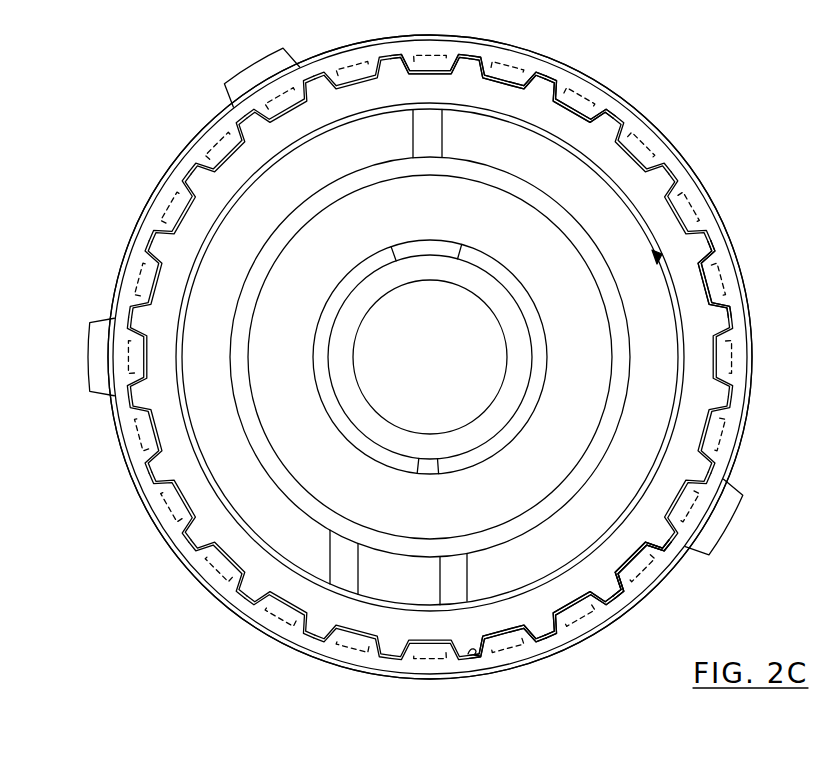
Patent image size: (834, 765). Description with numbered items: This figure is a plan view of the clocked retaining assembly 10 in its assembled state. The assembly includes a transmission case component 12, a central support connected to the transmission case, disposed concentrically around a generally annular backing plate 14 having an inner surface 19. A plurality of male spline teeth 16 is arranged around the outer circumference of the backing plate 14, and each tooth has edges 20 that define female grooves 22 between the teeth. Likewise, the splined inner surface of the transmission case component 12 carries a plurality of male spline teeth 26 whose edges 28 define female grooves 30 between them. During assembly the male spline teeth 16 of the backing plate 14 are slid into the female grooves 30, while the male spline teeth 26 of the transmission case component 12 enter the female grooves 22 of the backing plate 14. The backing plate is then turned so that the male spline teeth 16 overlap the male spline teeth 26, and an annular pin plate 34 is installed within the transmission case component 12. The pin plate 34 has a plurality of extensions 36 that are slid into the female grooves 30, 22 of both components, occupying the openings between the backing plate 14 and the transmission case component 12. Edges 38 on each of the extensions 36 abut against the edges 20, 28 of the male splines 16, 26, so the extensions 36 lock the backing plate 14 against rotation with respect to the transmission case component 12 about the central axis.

The clocked retaining assembly 10 is at (78, 94).
The transmission case component 12 is at (727, 435).
The backing plate 14 is at (428, 53).
The male spline teeth 16 is at (505, 67).
The inner surface 19 is at (656, 251).
The edges 20 is at (478, 656).
The female grooves 22 is at (663, 540).
The male spline teeth 26 is at (487, 65).
The edges 28 is at (550, 640).
The female grooves 30 is at (633, 567).
The pin plate 34 is at (698, 292).
The extensions 36 is at (735, 320).
The edges 38 is at (597, 613).